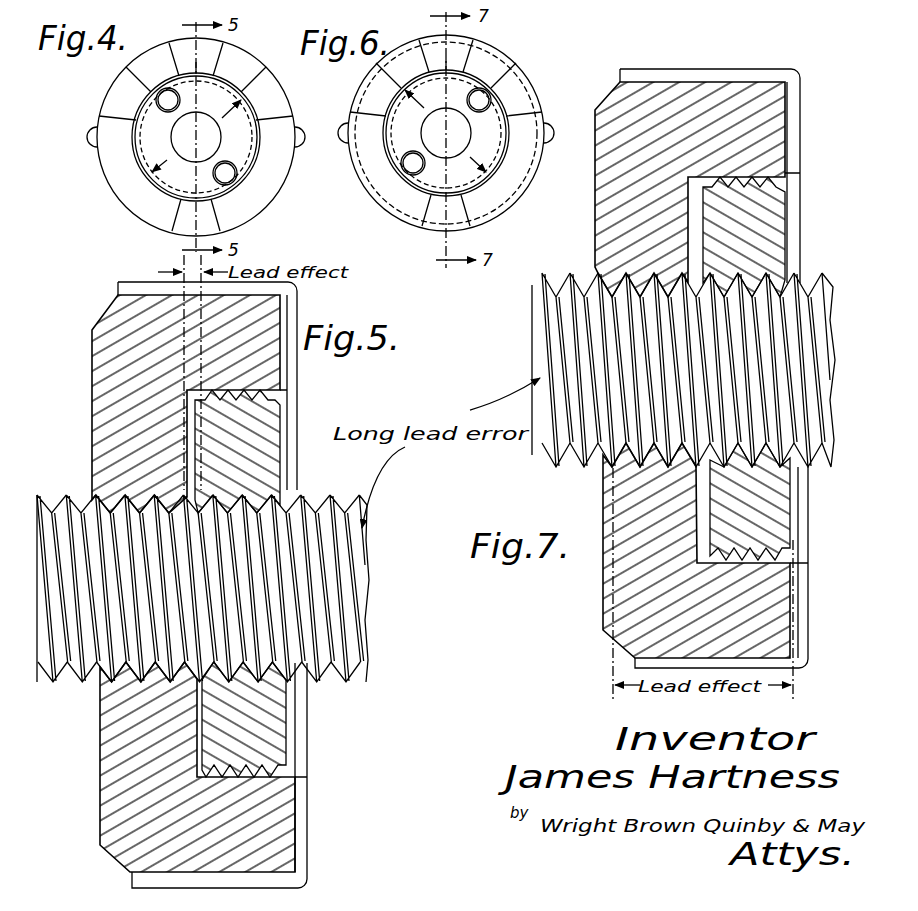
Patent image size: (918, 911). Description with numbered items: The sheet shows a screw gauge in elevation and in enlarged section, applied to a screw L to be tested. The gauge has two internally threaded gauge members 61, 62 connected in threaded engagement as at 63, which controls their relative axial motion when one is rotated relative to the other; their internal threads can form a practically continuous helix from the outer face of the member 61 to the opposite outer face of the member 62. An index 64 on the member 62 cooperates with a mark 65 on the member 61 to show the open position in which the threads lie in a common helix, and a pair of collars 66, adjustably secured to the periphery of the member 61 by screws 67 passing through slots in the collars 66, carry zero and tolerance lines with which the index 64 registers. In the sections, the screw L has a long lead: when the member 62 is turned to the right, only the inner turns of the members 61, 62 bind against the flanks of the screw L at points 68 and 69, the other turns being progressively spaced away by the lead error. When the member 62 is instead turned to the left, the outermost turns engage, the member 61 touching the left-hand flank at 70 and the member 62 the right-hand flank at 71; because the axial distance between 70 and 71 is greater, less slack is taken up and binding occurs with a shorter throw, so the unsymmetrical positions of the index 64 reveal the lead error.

In FIG. 4, the gauge member 61 is at (180, 46).
In FIG. 6, the gauge member 61 is at (434, 42).
In FIG. 5, the gauge member 61 is at (125, 392).
In FIG. 7, the gauge member 61 is at (625, 100).
In FIG. 4, the gauge member 62 is at (178, 180).
In FIG. 6, the gauge member 62 is at (430, 182).
In FIG. 5, the gauge member 62 is at (262, 470).
In FIG. 7, the gauge member 62 is at (770, 528).
In FIG. 5, the threaded engagement 63 is at (290, 385).
In FIG. 7, the threaded engagement 63 is at (752, 556).
In FIG. 4, the index 64 is at (236, 127).
In FIG. 6, the index 64 is at (408, 114).
In FIG. 4, the mark 65 is at (210, 60).
In FIG. 6, the mark 65 is at (450, 62).
In FIG. 4, the collar 66 is at (110, 168).
In FIG. 6, the collar 66 is at (290, 172).
In FIG. 5, the collar 66 is at (128, 290).
In FIG. 7, the collar 66 is at (736, 69).
In FIG. 4, the screw 67 is at (92, 130).
In FIG. 6, the screw 67 is at (344, 126).
In FIG. 5, the point of engagement 68 is at (182, 482).
In FIG. 5, the point of engagement 69 is at (217, 490).
In FIG. 7, the point of contact 70 is at (603, 470).
In FIG. 7, the point of contact 71 is at (792, 464).
In FIG. 5, the screw L is at (320, 605).
In FIG. 7, the screw L is at (560, 330).